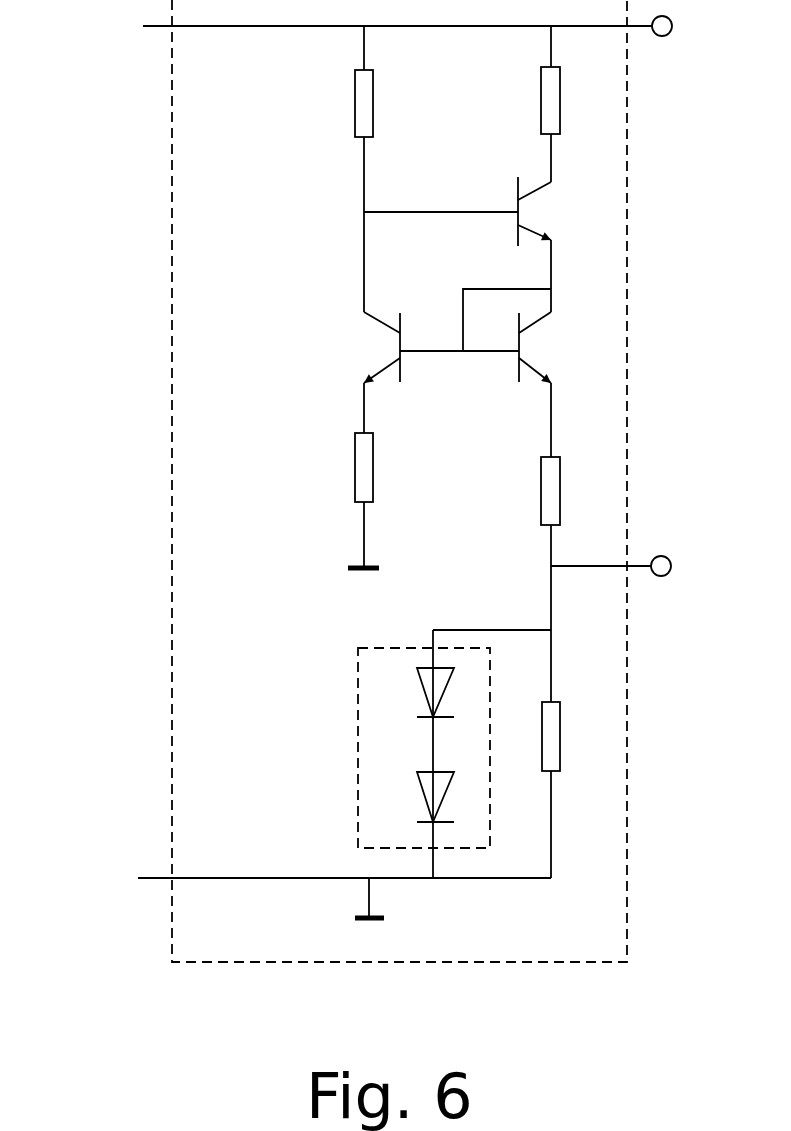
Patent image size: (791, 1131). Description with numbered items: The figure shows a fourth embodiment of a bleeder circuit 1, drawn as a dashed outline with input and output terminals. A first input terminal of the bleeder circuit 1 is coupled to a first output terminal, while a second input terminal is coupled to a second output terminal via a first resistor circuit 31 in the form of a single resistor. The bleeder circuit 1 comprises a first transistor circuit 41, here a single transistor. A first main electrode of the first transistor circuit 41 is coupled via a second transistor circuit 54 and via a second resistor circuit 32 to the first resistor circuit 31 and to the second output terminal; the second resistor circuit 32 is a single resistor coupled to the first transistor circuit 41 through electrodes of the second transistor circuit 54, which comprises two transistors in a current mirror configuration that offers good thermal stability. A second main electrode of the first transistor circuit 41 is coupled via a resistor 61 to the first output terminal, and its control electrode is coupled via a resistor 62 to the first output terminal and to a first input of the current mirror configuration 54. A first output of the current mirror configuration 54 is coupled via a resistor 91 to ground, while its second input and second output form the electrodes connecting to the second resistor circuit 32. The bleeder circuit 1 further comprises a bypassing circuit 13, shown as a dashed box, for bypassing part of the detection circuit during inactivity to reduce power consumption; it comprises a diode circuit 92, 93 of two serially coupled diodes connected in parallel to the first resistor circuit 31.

The bleeder circuit 1 is at (603, 962).
The bypassing circuit 13 is at (433, 754).
The first resistor circuit 31 is at (572, 790).
The second resistor circuit 32 is at (572, 542).
The first transistor circuit 41 is at (470, 244).
The second transistor circuit 54 is at (476, 390).
The resistor 61 is at (572, 104).
The resistor 62 is at (346, 169).
The resistor 91 is at (381, 475).
The diode circuit 92 is at (416, 692).
The diode circuit 93 is at (416, 797).